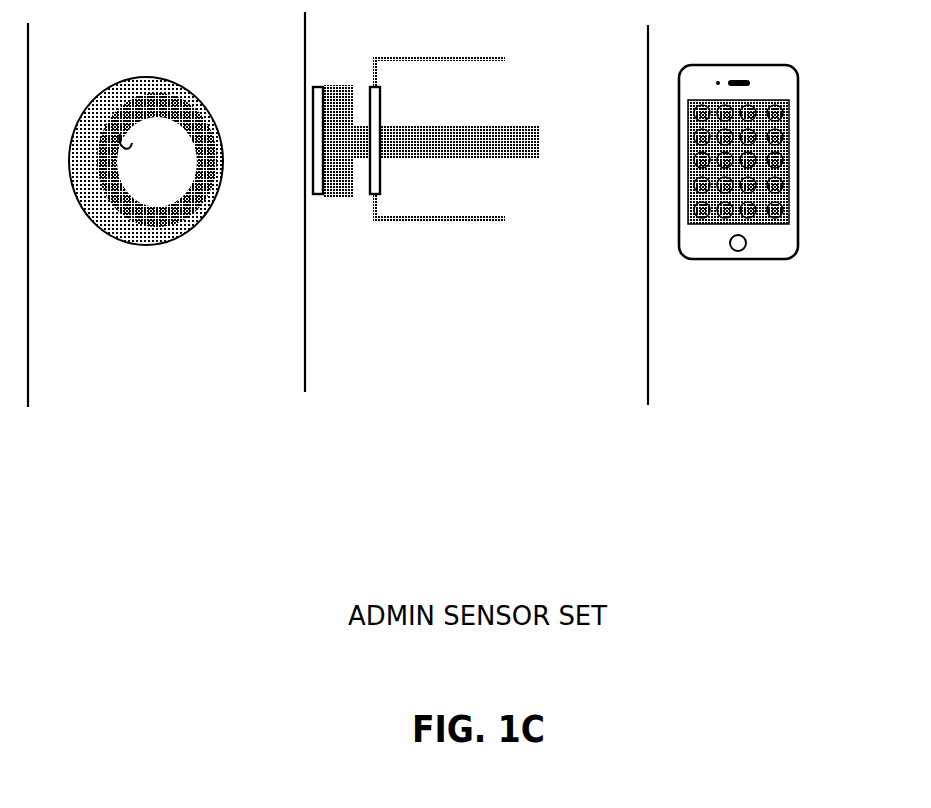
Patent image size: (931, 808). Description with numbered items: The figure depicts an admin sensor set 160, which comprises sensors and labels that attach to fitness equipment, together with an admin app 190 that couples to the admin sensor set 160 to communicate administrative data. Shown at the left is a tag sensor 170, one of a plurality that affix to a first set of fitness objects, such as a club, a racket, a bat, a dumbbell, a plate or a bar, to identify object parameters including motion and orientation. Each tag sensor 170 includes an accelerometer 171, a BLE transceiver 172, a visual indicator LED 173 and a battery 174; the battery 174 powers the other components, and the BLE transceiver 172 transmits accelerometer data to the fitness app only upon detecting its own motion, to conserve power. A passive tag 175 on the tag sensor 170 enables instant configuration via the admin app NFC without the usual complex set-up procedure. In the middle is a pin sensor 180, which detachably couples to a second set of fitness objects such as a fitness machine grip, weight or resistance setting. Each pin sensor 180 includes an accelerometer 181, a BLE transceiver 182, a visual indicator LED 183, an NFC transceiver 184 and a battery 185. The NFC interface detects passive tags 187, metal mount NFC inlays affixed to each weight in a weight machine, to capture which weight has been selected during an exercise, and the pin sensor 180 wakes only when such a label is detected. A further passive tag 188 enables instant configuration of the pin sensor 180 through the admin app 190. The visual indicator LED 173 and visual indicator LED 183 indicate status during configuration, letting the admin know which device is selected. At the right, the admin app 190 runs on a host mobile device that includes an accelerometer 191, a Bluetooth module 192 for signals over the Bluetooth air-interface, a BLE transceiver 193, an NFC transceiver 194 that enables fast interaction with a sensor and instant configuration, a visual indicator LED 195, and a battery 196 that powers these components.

The admin sensor set 160 is at (503, 683).
The tag sensor 170 is at (172, 142).
The passive tag 175 is at (187, 212).
The accelerometer 171 is at (90, 297).
The BLE transceiver 172 is at (87, 330).
The visual indicator LED 173 is at (88, 360).
The battery 174 is at (105, 390).
The pin sensor 180 is at (438, 134).
The passive tag 187 is at (380, 85).
The passive tag 188 is at (318, 196).
The accelerometer 181 is at (368, 285).
The BLE transceiver 182 is at (365, 315).
The visual indicator LED 183 is at (366, 347).
The NFC transceiver 184 is at (367, 377).
The battery 185 is at (383, 409).
The admin app 190 is at (817, 88).
The accelerometer 191 is at (710, 299).
The Bluetooth module 192 is at (738, 329).
The BLE transceiver 193 is at (707, 360).
The NFC transceiver 194 is at (709, 390).
The visual indicator LED 195 is at (708, 421).
The battery 196 is at (725, 452).